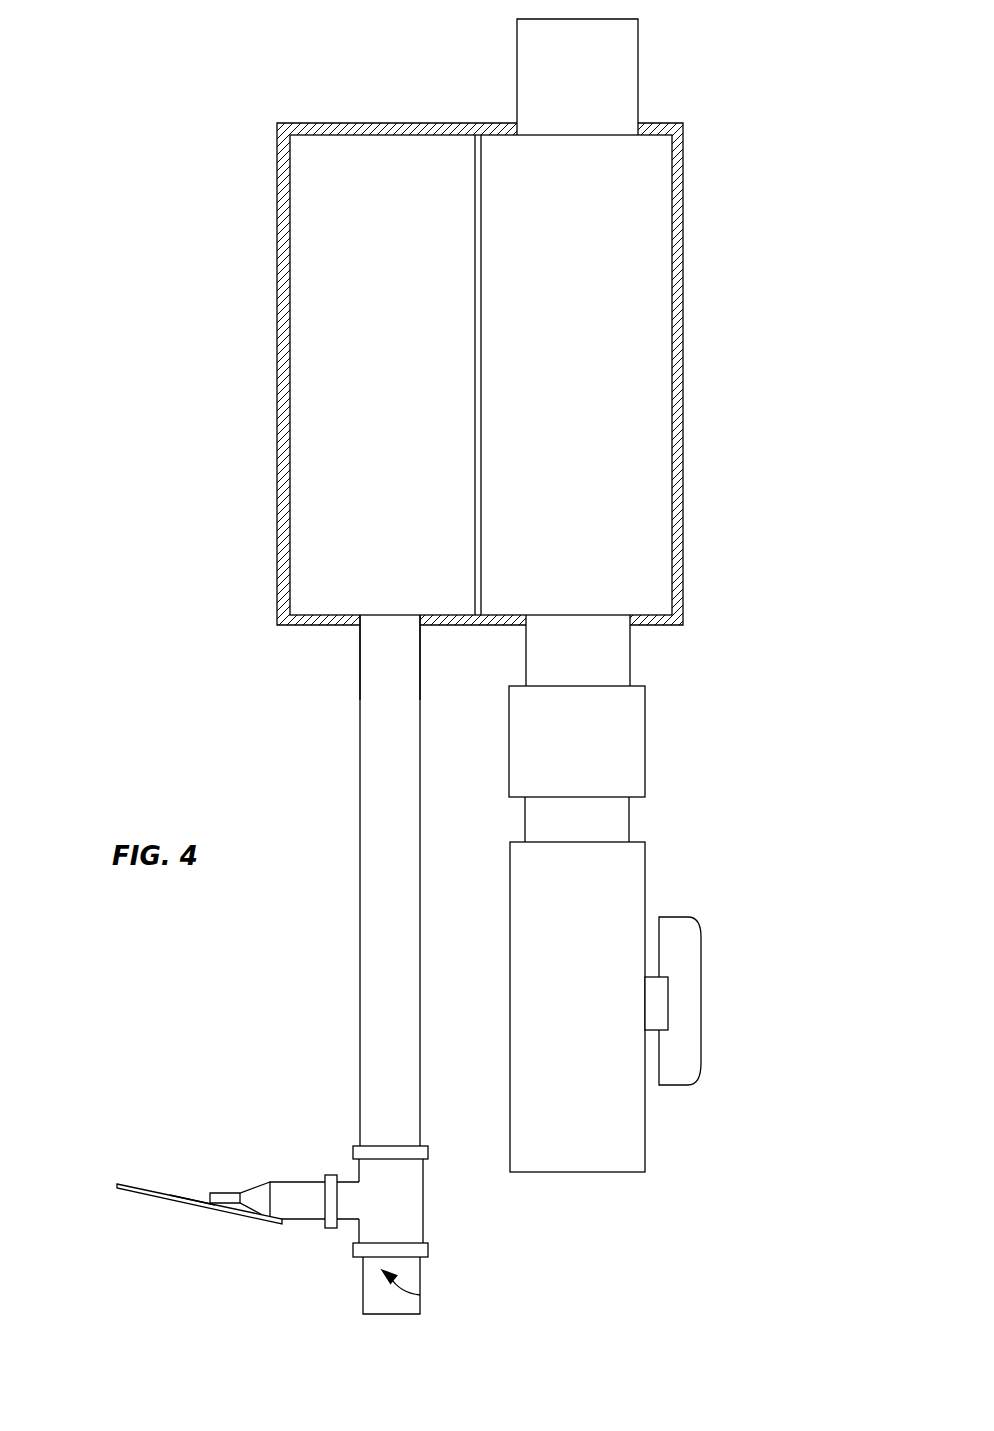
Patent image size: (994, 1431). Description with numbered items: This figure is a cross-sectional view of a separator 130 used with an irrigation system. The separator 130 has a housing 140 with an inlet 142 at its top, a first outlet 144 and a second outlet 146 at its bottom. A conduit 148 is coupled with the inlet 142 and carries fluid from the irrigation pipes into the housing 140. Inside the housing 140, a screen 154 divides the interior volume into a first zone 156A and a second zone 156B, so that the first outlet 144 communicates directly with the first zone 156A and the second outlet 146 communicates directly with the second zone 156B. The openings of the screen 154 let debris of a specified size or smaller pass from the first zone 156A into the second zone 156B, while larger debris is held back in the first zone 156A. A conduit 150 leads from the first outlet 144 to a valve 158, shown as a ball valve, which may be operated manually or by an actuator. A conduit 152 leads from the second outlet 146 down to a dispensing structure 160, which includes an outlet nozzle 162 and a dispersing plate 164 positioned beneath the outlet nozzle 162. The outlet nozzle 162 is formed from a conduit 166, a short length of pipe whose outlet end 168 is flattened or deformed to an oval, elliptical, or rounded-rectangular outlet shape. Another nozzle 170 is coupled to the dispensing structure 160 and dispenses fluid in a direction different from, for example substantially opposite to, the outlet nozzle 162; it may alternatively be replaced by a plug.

The separator 130 is at (176, 334).
The housing 140 is at (683, 368).
The inlet 142 is at (624, 124).
The first outlet 144 is at (597, 627).
The second outlet 146 is at (387, 623).
The conduit 148 is at (517, 70).
The conduit 150 is at (632, 670).
The conduit 152 is at (358, 773).
The screen 154 is at (468, 468).
The first zone 156A is at (600, 318).
The second zone 156B is at (345, 349).
The valve 158 is at (645, 893).
The dispensing structure 160 is at (279, 1157).
The outlet nozzle 162 is at (222, 1189).
The dispersing plate 164 is at (167, 1198).
The conduit 166 is at (303, 1182).
The outlet end 168 is at (210, 1197).
The nozzle 170 is at (420, 1297).